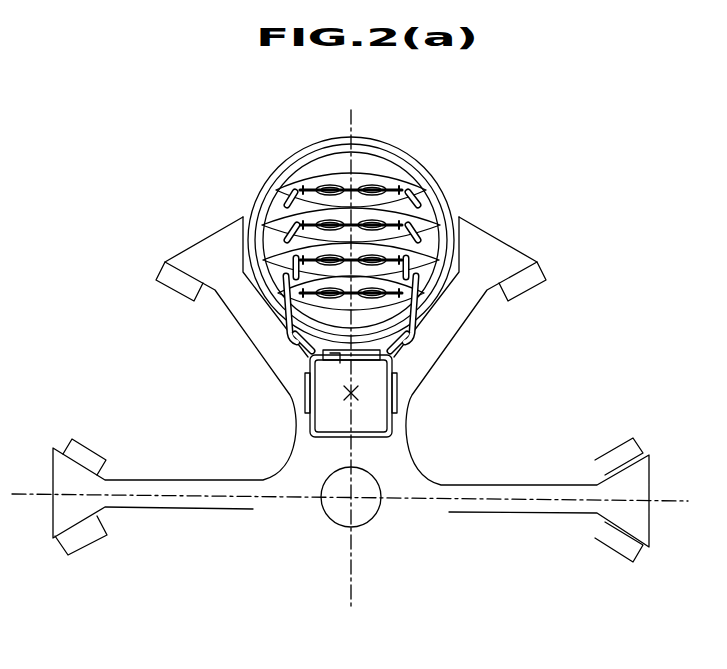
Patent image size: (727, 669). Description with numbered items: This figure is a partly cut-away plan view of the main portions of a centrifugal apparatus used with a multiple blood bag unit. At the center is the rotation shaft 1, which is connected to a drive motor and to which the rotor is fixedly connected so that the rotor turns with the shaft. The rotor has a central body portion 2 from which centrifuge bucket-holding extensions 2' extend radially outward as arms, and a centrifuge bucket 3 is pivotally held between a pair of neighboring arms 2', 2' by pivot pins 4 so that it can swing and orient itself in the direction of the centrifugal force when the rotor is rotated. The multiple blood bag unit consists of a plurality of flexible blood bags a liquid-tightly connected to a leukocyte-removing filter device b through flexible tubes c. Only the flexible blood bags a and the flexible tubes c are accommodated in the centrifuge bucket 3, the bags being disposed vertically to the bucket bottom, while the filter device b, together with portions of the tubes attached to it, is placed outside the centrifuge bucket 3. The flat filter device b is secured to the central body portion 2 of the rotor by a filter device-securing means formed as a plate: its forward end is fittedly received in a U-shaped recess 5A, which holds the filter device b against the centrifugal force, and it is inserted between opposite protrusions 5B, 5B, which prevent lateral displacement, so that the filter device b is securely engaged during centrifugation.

The rotation shaft 1 is at (380, 513).
The central body portion 2 is at (180, 386).
The centrifuge bucket-holding extension 2' is at (521, 383).
The centrifuge bucket 3 is at (278, 168).
The pivot pin 4 is at (527, 290).
The U-shaped recess 5A is at (330, 358).
The protrusion 5B is at (307, 402).
The flexible blood bag a is at (377, 183).
The flexible tube c is at (415, 198).
The leukocyte-removing filter device b is at (372, 417).